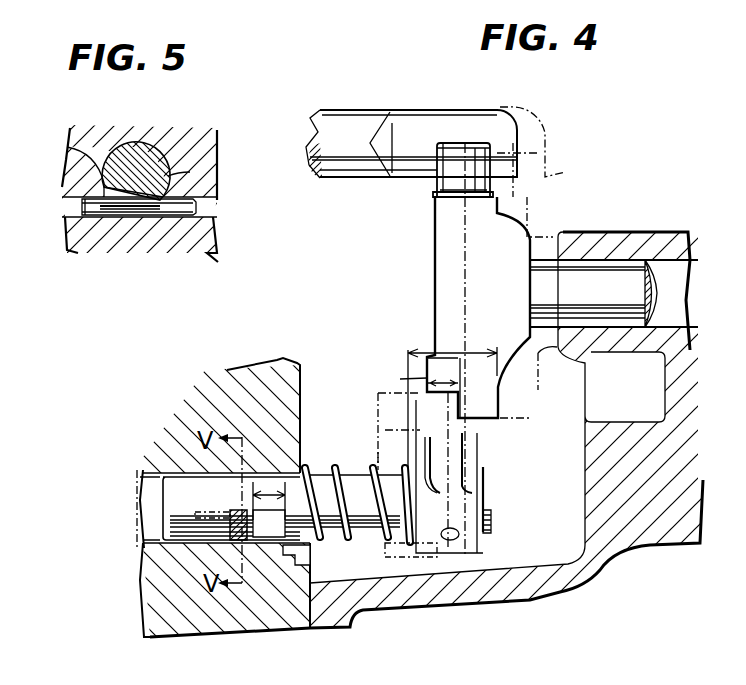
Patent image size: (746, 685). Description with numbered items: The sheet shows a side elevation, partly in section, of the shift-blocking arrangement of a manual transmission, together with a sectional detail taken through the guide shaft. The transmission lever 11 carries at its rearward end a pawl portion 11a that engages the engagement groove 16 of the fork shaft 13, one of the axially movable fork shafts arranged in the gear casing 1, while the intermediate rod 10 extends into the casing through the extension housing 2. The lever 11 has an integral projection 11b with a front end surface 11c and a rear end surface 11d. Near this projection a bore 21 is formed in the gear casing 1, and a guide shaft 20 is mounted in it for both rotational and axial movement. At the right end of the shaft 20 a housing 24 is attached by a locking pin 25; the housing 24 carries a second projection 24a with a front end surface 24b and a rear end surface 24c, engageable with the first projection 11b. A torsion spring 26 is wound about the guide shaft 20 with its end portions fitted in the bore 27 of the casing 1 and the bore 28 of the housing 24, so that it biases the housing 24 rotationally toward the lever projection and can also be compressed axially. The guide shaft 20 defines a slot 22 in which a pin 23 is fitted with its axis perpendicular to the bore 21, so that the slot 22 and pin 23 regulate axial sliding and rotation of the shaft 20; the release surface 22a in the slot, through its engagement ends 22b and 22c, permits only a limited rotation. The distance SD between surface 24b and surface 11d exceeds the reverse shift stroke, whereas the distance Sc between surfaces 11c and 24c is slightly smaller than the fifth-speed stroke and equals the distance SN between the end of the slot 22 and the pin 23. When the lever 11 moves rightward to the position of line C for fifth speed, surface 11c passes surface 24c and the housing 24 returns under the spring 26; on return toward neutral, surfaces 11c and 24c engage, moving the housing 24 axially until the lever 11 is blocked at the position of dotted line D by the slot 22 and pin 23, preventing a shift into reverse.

In FIG. 4, the gear casing 1 is at (275, 638).
In FIG. 4, the extension housing 2 is at (500, 598).
In FIG. 4, the intermediate rod 10 is at (610, 267).
In FIG. 4, the transmission lever 11 is at (435, 298).
In FIG. 4, the pawl portion 11a is at (450, 190).
In FIG. 4, the projection 11b is at (500, 394).
In FIG. 4, the front end surface 11c is at (407, 357).
In FIG. 4, the rear end surface 11d is at (500, 406).
In FIG. 4, the fork shaft 13 is at (399, 112).
In FIG. 4, the engagement groove 16 is at (454, 143).
In FIG. 5, the guide shaft 20 is at (147, 155).
In FIG. 4, the guide shaft 20 is at (172, 478).
In FIG. 4, the bore 21 is at (147, 505).
In FIG. 5, the slot 22 is at (119, 200).
In FIG. 4, the slot 22 is at (270, 540).
In FIG. 5, the release surface 22a is at (128, 152).
In FIG. 5, the engagement end 22b is at (188, 173).
In FIG. 5, the engagement end 22c is at (67, 147).
In FIG. 5, the pin 23 is at (169, 217).
In FIG. 4, the pin 23 is at (233, 510).
In FIG. 4, the housing 24 is at (472, 503).
In FIG. 4, the second projection 24a is at (410, 404).
In FIG. 4, the front end surface 24b is at (395, 426).
In FIG. 4, the rear end surface 24c is at (503, 419).
In FIG. 4, the locking pin 25 is at (456, 541).
In FIG. 4, the torsion spring 26 is at (334, 467).
In FIG. 4, the bore 27 is at (310, 563).
In FIG. 4, the bore 28 is at (427, 553).
In FIG. 4, the line C is at (539, 172).
In FIG. 4, the dotted line D is at (378, 452).
In FIG. 4, the distance SD is at (458, 354).
In FIG. 4, the distance SN is at (270, 490).
In FIG. 4, the distance SC Sc is at (400, 379).